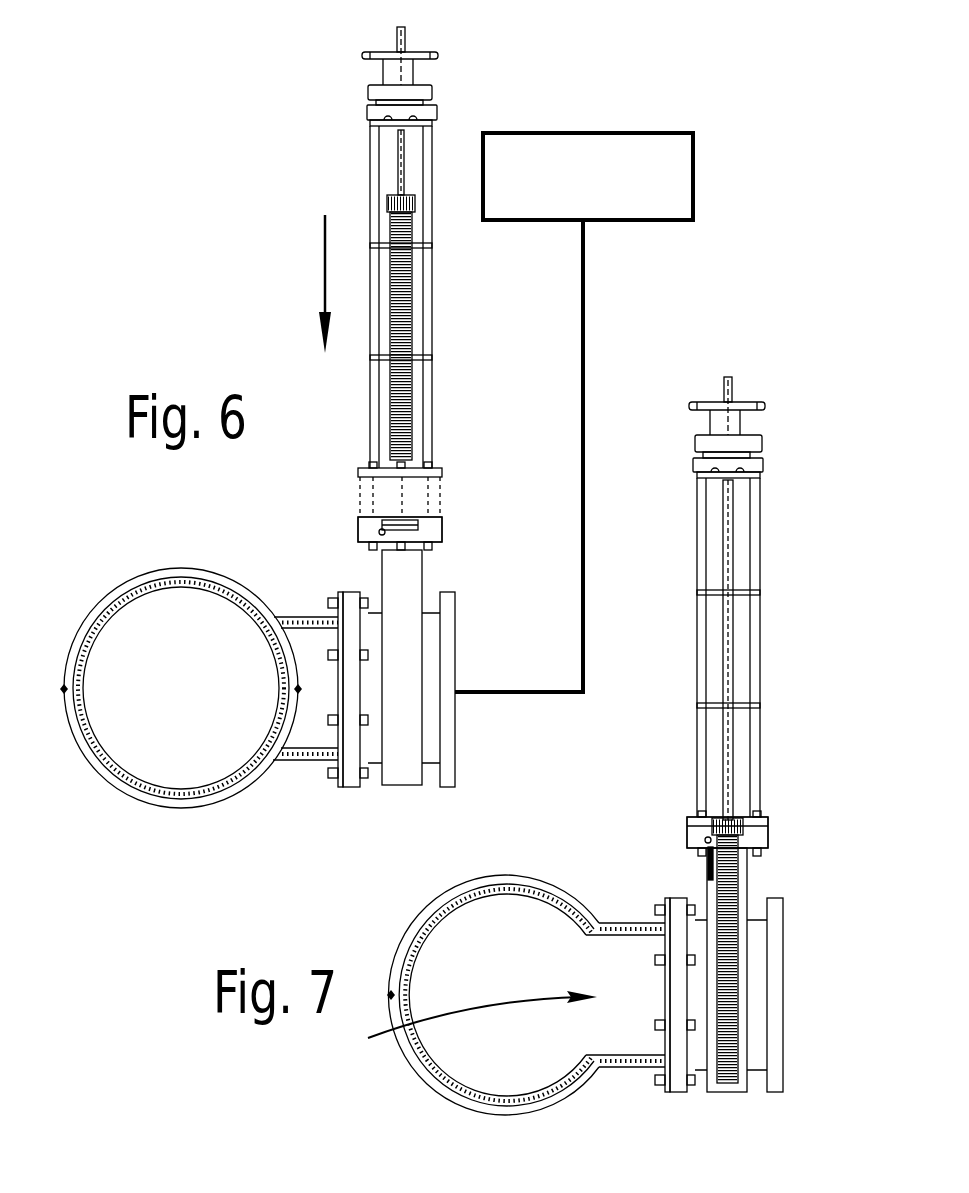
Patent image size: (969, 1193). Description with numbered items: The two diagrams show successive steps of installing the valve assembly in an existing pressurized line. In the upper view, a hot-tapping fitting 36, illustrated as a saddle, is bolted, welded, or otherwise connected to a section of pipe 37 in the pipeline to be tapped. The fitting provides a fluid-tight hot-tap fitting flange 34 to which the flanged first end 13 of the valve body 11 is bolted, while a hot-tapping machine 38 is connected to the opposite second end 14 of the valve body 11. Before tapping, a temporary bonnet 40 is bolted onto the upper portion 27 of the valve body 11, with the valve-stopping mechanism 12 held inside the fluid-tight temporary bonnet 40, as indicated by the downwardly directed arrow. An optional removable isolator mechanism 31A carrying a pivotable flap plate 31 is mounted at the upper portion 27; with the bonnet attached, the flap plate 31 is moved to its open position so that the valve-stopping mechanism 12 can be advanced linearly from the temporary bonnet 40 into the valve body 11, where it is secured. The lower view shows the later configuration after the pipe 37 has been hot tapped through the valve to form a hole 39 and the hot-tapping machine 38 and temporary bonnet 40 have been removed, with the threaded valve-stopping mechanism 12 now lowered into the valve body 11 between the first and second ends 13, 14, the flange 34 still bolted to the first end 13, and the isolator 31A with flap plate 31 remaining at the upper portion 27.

In FIG. 6, the valve body 11 is at (410, 788).
In FIG. 7, the valve body 11 is at (737, 1093).
In FIG. 6, the valve-stopping mechanism 12 is at (410, 405).
In FIG. 7, the valve-stopping mechanism 12 is at (738, 890).
In FIG. 6, the first end 13 is at (350, 788).
In FIG. 7, the first end 13 is at (677, 1093).
In FIG. 6, the second end 14 is at (455, 788).
In FIG. 7, the second end 14 is at (783, 1093).
In FIG. 6, the upper portion 27 is at (432, 540).
In FIG. 7, the upper portion 27 is at (768, 843).
In FIG. 6, the flap plate 31 is at (410, 530).
In FIG. 7, the flap plate 31 is at (707, 868).
In FIG. 6, the isolator mechanism 31A is at (358, 530).
In FIG. 7, the isolator mechanism 31A is at (687, 832).
In FIG. 6, the hot-tap fitting flange 34 is at (334, 776).
In FIG. 7, the hot-tap fitting flange 34 is at (660, 1083).
In FIG. 6, the hot-tapping fitting 36 is at (192, 572).
In FIG. 7, the hot-tapping fitting 36 is at (427, 916).
In FIG. 6, the pipe 37 is at (165, 582).
In FIG. 7, the pipe 37 is at (413, 945).
In FIG. 6, the hot-tapping machine 38 is at (605, 133).
In FIG. 7, the hole 39 is at (467, 1022).
In FIG. 6, the temporary bonnet 40 is at (370, 54).
In FIG. 7, the temporary bonnet 40 is at (763, 403).